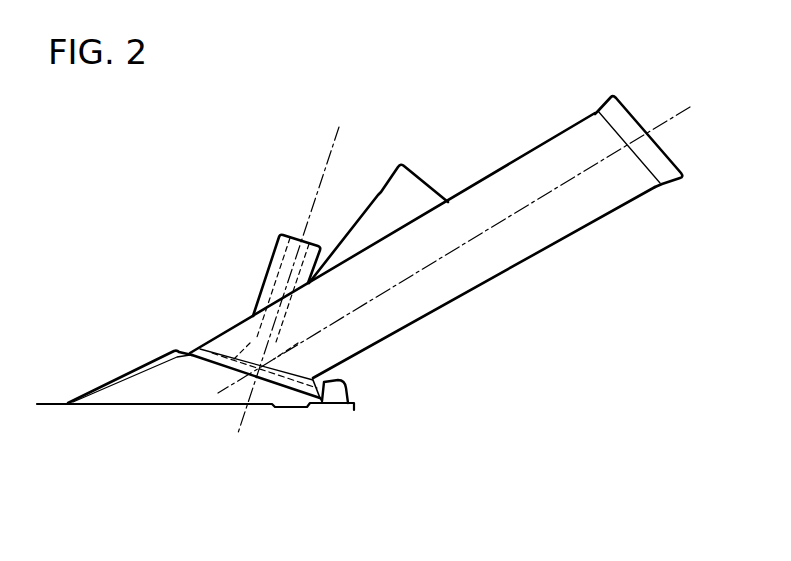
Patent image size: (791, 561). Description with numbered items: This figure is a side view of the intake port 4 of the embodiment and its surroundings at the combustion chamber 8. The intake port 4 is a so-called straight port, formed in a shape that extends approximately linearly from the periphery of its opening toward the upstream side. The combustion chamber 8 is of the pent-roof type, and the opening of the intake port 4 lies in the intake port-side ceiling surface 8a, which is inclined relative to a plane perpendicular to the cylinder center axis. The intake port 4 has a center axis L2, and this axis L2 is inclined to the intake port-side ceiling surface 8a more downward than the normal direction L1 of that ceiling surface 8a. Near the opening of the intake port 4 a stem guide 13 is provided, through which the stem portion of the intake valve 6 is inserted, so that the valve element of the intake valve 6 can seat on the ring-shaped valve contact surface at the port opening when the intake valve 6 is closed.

The intake port 4 is at (478, 287).
The intake valve 6 is at (288, 270).
The combustion chamber 8 is at (153, 388).
The intake port-side ceiling surface 8a is at (273, 383).
The stem guide 13 is at (275, 240).
The normal direction of the intake port-side ceiling surface L1 is at (330, 157).
The center axis of the intake port L2 is at (552, 192).